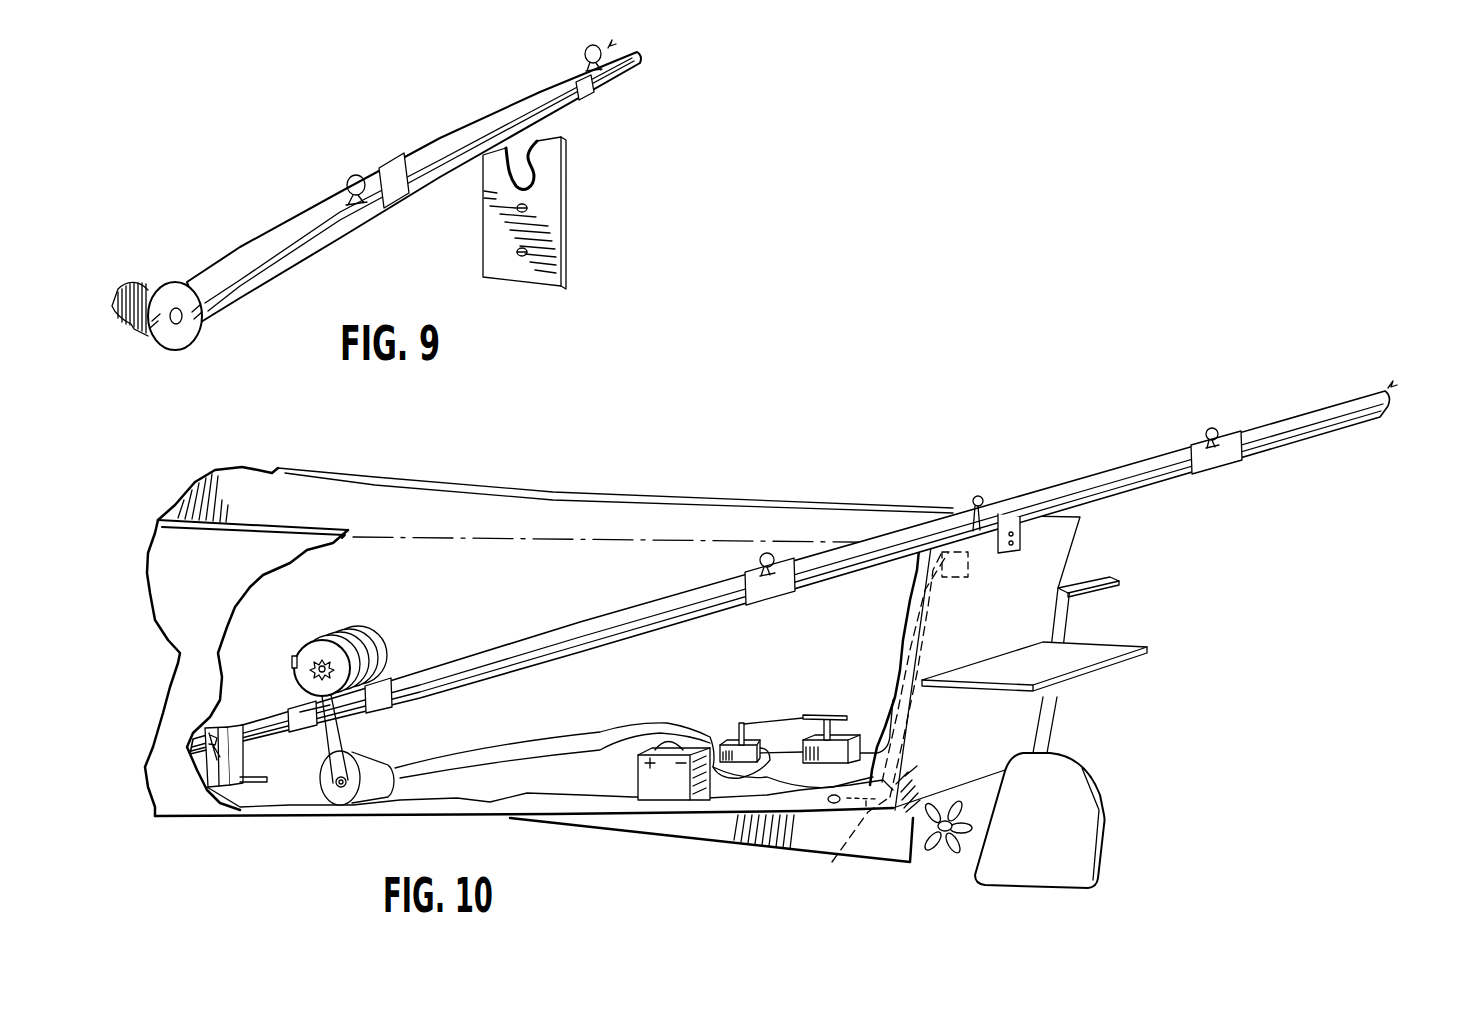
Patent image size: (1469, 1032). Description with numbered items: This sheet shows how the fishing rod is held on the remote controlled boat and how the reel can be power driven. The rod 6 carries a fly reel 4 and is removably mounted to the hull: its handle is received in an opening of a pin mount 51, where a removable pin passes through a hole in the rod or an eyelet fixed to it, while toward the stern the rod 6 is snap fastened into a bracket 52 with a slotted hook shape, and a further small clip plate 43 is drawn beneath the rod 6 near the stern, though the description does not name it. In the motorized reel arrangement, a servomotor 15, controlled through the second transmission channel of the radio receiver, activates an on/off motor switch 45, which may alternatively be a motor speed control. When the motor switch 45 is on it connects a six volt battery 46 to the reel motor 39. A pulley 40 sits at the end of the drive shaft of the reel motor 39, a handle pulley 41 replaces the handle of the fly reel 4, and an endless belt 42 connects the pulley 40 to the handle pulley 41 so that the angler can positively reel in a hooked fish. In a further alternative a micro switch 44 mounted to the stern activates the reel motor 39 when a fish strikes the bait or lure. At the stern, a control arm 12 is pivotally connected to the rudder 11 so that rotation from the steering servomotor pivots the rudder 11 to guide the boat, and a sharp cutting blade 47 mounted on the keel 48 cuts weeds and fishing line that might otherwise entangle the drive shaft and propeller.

In FIG. 10, the fly reel 4 is at (321, 643).
In FIG. 10, the rod 6 is at (1307, 445).
In FIG. 10, the rudder 11 is at (1082, 856).
In FIG. 10, the control arm 12 is at (1113, 588).
In FIG. 10, the servomotor 15 is at (858, 727).
In FIG. 10, the reel motor 39 is at (373, 773).
In FIG. 10, the pulley 40 is at (337, 790).
In FIG. 10, the handle pulley 41 is at (345, 660).
In FIG. 10, the endless belt 42 is at (345, 733).
In FIG. 10, the rod clip bracket 43 is at (983, 545).
In FIG. 10, the micro switch 44 is at (955, 577).
In FIG. 10, the motor switch 45 is at (722, 740).
In FIG. 10, the battery 46 is at (638, 783).
In FIG. 10, the cutting blade 47 is at (848, 848).
In FIG. 10, the keel 48 is at (707, 830).
In FIG. 10, the pin mount 51 is at (227, 727).
In FIG. 9, the bracket 52 is at (548, 247).